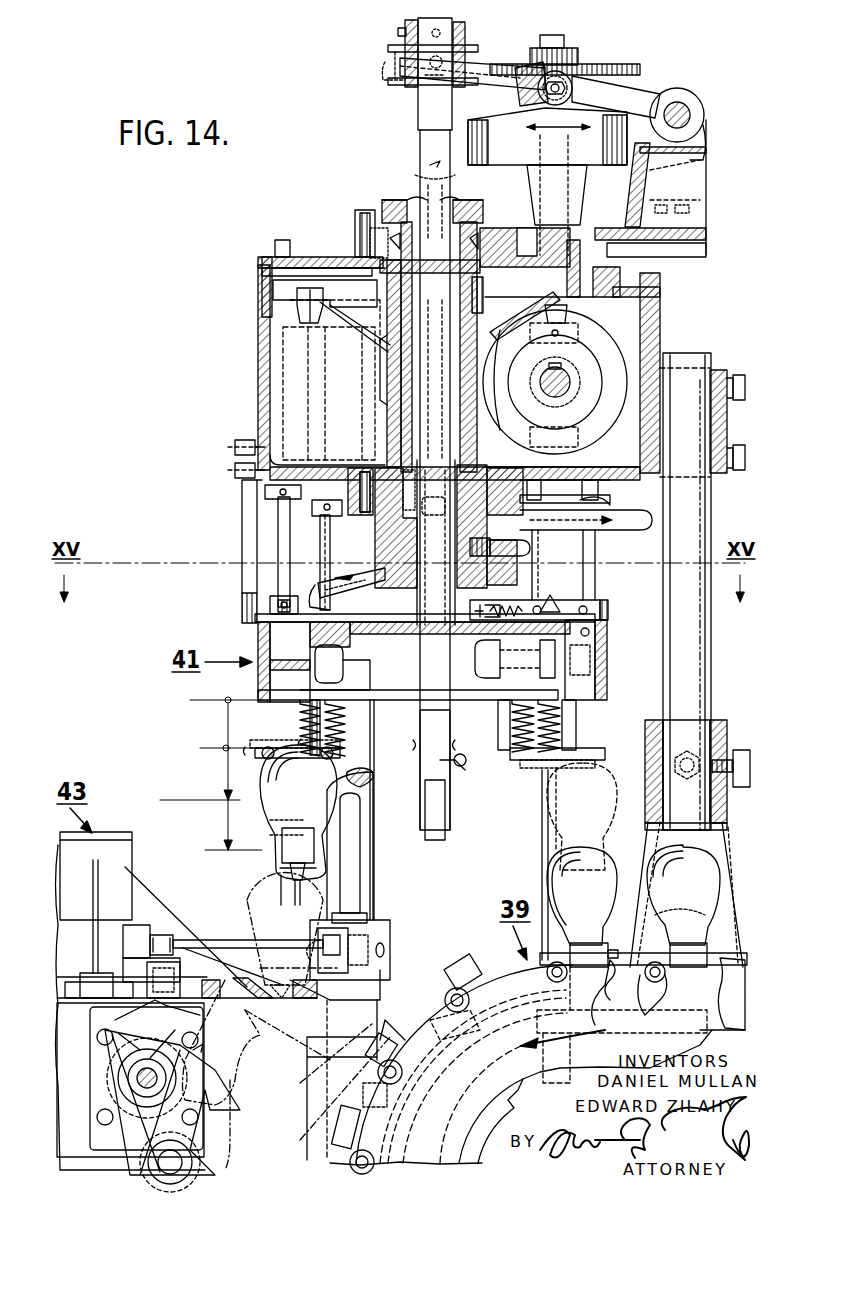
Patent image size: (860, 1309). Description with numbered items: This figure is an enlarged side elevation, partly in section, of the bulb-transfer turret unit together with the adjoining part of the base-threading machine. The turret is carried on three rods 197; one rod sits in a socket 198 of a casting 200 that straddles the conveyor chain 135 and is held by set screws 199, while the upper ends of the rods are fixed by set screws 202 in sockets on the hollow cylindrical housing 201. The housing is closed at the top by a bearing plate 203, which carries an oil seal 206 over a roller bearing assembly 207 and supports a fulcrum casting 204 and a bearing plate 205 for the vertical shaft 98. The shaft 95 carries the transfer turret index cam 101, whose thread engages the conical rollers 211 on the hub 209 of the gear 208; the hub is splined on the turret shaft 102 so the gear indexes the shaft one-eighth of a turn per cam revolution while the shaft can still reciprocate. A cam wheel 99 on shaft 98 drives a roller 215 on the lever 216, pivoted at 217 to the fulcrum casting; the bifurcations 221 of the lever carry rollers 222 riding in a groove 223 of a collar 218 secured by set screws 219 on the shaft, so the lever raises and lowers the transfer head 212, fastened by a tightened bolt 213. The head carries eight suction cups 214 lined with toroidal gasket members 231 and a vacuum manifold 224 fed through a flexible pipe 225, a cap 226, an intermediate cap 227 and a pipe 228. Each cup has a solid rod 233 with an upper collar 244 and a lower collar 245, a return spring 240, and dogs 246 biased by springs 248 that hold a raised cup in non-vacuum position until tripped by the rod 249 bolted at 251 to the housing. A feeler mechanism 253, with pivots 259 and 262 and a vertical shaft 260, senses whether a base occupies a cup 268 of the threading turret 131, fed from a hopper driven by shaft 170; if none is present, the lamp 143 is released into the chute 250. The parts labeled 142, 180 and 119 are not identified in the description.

The turret shaft 102 is at (420, 130).
The collar 218 is at (466, 30).
The set screws 219 is at (398, 33).
The groove 223 is at (392, 55).
The roller 222 is at (390, 80).
The bifurcations 221 is at (470, 62).
The roller 215 is at (575, 80).
The lever 216 is at (640, 88).
The pivot 217 is at (688, 106).
The vertical shaft 98 is at (558, 34).
The cam wheel 99 is at (619, 64).
The bearing plate 205 is at (502, 198).
The fulcrum casting 204 is at (690, 196).
The oil seal 206 is at (390, 198).
The roller bearing assembly 207 is at (460, 244).
The bearing plate 203 is at (330, 253).
The housing 201 is at (258, 366).
The gear 208 is at (335, 328).
The conical rollers 211 is at (297, 310).
The hub 209 is at (387, 382).
The shaft 95 is at (565, 375).
The transfer turret index cam 101 is at (565, 375).
The set screws 202 is at (738, 472).
The rods 197 is at (688, 516).
The socket 198 is at (728, 720).
The set screws 199 is at (715, 782).
The casting 200 is at (670, 838).
The lamp 143 is at (665, 875).
The lamp holder 142 is at (516, 948).
The rod 249 is at (240, 513).
The solid rod 233 is at (278, 546).
The upper collar 244 is at (305, 507).
The flexible pipe 225 is at (352, 578).
The lower collar 245 is at (242, 592).
The dogs 246 is at (398, 612).
The springs 248 is at (510, 606).
The pipe 228 is at (630, 530).
The cap 226 is at (560, 532).
The intermediate cap 227 is at (262, 470).
The bolts 251 is at (235, 472).
The transfer head 212 is at (258, 686).
The vacuum manifold 224 is at (330, 653).
The return spring 240 is at (300, 718).
The suction cups 214 is at (262, 740).
The tightened bolt 213 is at (470, 742).
The gasket member 231 is at (270, 798).
The lamp 180 is at (248, 905).
The vertical shaft 260 is at (355, 868).
The pivot 262 is at (390, 936).
The feeler mechanism 253 is at (205, 918).
The pivot 259 is at (135, 926).
The cup 268 is at (261, 978).
The threading turret 131 is at (125, 867).
The hopper drive shaft 170 is at (205, 1044).
The chute 250 is at (232, 1097).
The turret wheel 119 is at (330, 1127).
The conveyor chain 135 is at (722, 1010).